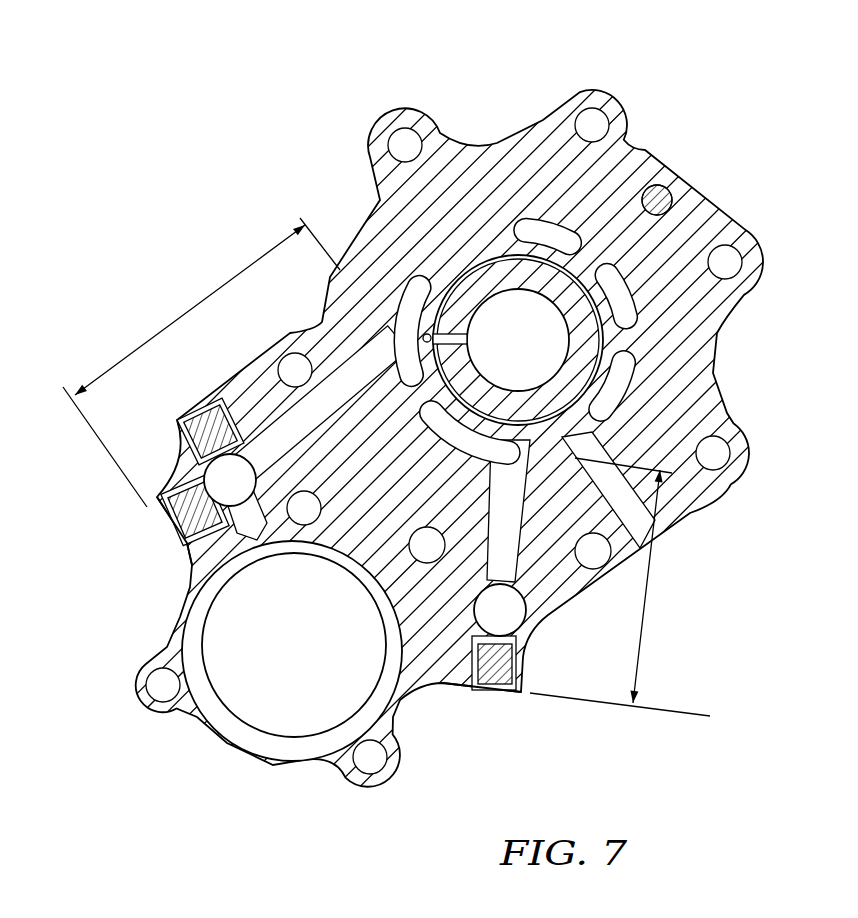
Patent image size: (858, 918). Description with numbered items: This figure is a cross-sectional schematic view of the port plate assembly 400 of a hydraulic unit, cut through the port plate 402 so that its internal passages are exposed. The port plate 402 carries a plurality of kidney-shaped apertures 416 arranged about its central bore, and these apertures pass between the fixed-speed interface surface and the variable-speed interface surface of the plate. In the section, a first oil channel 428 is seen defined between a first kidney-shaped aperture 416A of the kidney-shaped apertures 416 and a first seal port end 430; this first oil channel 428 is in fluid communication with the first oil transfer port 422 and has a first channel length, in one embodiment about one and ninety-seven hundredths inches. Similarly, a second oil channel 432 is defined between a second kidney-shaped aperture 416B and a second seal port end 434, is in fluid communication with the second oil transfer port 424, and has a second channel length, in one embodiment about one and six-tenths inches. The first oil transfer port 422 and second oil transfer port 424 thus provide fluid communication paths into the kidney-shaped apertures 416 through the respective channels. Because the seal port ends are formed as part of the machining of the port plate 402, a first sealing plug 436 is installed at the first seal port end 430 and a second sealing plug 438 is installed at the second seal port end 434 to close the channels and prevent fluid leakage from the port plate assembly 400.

The port plate assembly 400 is at (786, 140).
The port plate 402 is at (637, 140).
The kidney-shaped apertures 416 is at (640, 266).
The first kidney-shaped aperture 416A is at (408, 298).
The second kidney-shaped aperture 416B is at (513, 340).
The first oil transfer port 422 is at (230, 480).
The second oil transfer port 424 is at (510, 618).
The first oil channel 428 is at (330, 327).
The first seal port end 430 is at (177, 547).
The second oil channel 432 is at (507, 558).
The second seal port end 434 is at (480, 685).
The first sealing plug 436 is at (177, 517).
The second sealing plug 438 is at (497, 672).